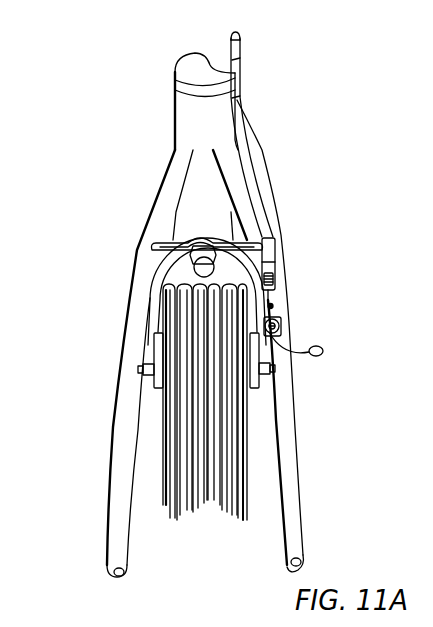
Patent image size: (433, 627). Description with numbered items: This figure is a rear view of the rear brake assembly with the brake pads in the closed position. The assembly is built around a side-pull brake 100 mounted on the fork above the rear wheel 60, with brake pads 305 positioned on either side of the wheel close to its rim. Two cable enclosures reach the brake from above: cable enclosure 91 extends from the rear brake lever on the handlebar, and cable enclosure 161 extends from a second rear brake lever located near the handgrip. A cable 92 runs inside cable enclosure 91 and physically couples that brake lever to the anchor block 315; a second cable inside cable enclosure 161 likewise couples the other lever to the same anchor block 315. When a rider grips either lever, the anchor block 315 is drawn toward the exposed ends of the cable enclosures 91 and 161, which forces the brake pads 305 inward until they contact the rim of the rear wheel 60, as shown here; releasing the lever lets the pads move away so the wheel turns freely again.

The rear wheel 60 is at (248, 494).
The cable enclosure 91 is at (241, 100).
The cable 92 is at (276, 302).
The side-pull brake 100 is at (156, 246).
The cable enclosure 161 is at (238, 53).
The brake pads 305 is at (152, 392).
The anchor block 315 is at (278, 324).